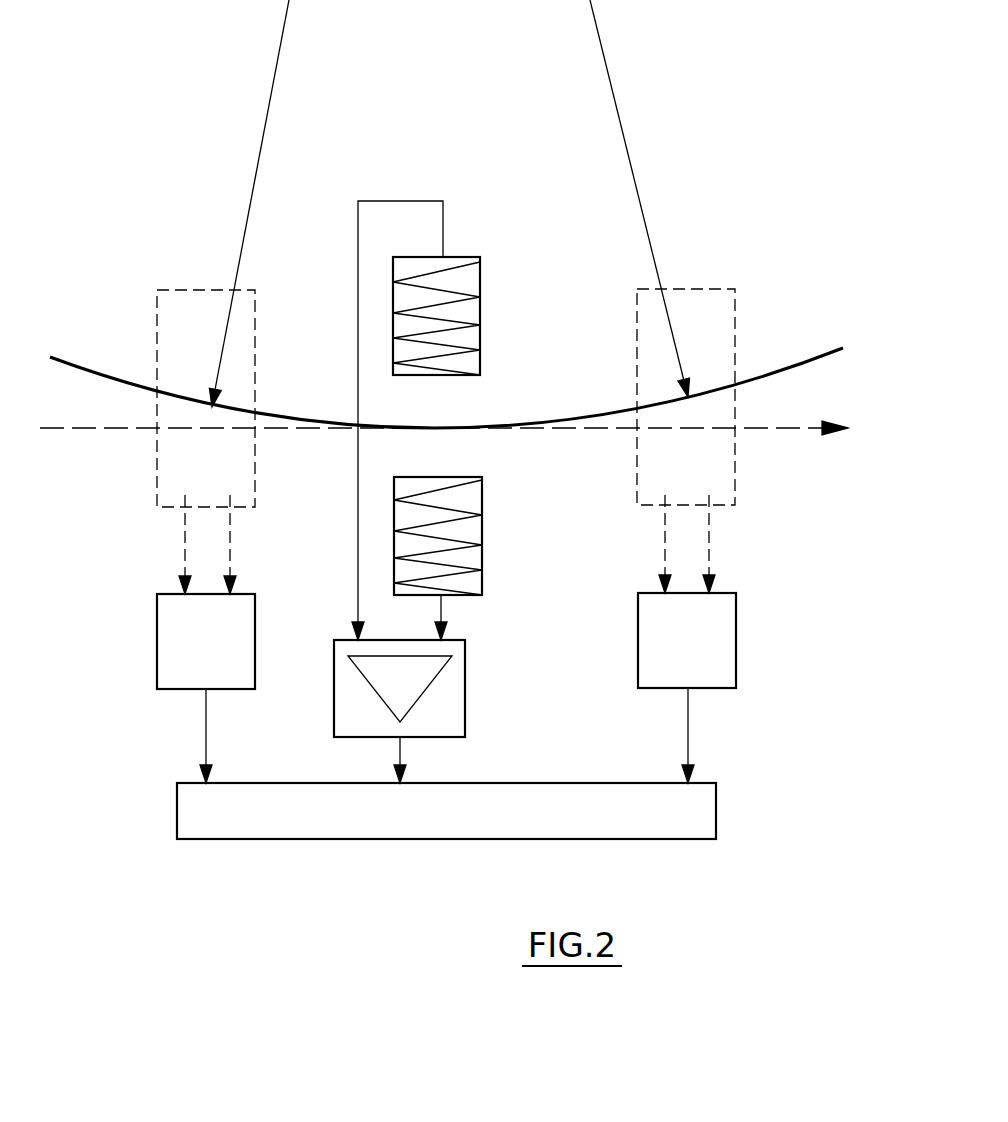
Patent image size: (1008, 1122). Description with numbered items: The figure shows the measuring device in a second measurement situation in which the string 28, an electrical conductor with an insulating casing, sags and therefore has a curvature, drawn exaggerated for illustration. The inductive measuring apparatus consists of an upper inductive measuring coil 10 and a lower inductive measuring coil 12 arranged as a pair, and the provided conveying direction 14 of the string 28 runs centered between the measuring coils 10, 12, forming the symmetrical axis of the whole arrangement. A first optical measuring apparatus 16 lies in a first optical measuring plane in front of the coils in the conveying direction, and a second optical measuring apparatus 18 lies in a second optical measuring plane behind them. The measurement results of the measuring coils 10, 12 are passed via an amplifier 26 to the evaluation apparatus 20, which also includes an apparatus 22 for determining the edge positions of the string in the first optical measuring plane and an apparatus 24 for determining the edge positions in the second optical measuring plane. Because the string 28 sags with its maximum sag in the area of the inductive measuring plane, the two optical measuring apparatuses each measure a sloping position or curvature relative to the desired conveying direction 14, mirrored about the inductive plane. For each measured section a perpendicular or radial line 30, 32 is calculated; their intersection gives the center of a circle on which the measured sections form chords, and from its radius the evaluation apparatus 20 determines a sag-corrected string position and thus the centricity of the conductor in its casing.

The upper inductive measuring coil 10 is at (480, 280).
The lower inductive measuring coil 12 is at (480, 528).
The conveying direction 14 is at (785, 428).
The first optical measuring apparatus 16 is at (192, 306).
The second optical measuring apparatus 18 is at (720, 323).
The evaluation apparatus 20 is at (213, 817).
The apparatus for determining the position of the edges of the string in the first o 22 is at (200, 638).
The apparatus for determining the position of the edges of the string in the second 24 is at (725, 633).
The amplifier 26 is at (453, 694).
The string 28 is at (102, 375).
The perpendicular or radial line 30 is at (280, 60).
The perpendicular or radial line 32 is at (612, 82).